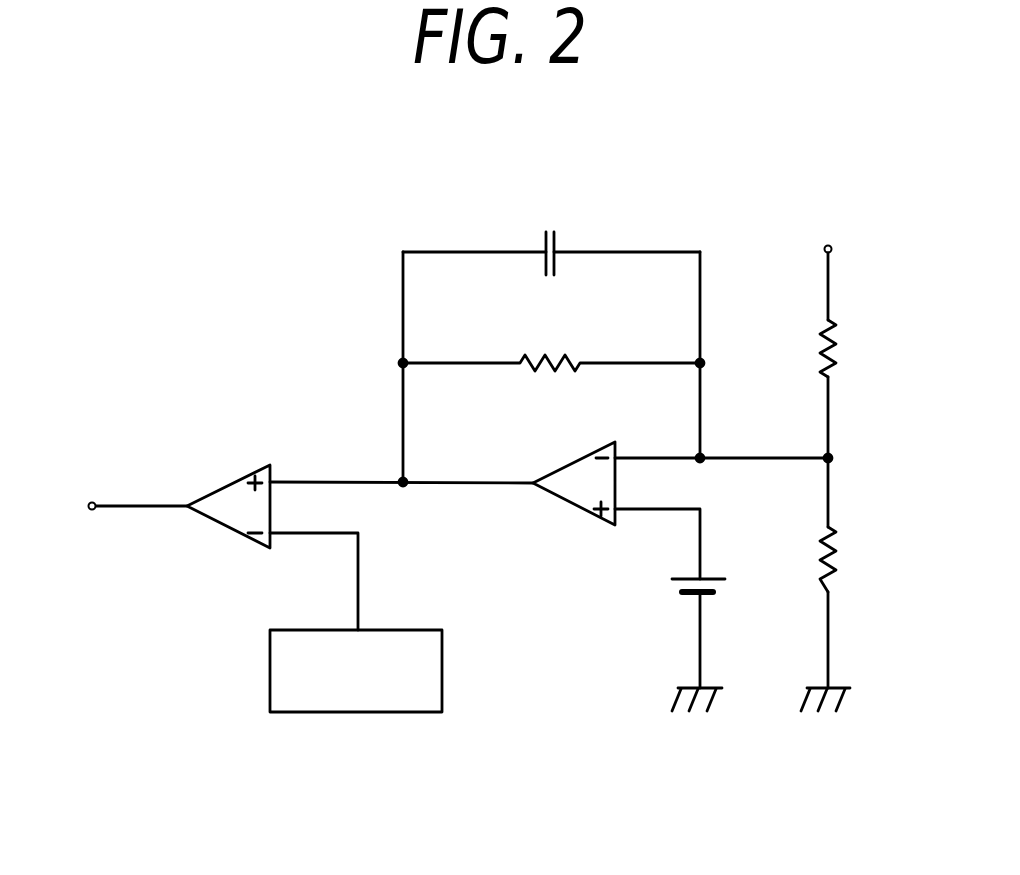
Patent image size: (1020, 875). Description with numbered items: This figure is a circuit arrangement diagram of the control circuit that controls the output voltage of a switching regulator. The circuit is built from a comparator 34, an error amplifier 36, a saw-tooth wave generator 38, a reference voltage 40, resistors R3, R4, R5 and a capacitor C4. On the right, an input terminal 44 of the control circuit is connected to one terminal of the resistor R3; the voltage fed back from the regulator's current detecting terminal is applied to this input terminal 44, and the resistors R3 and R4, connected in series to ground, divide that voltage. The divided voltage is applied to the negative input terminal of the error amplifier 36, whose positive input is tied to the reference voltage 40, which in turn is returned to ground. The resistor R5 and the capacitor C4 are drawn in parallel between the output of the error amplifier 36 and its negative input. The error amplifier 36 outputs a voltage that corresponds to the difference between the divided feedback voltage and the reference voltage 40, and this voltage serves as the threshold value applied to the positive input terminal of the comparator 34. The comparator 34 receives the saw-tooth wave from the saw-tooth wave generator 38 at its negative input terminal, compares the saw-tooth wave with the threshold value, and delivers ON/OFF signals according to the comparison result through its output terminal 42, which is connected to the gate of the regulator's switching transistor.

The comparator 34 is at (236, 478).
The error amplifier 36 is at (565, 500).
The saw-tooth wave generator 38 is at (348, 712).
The reference voltage 40 is at (672, 582).
The output terminal 42 is at (94, 500).
The input terminal 44 is at (828, 245).
The capacitor C4 is at (553, 232).
The resistor R3 is at (852, 348).
The resistor R4 is at (852, 559).
The resistor R5 is at (551, 343).